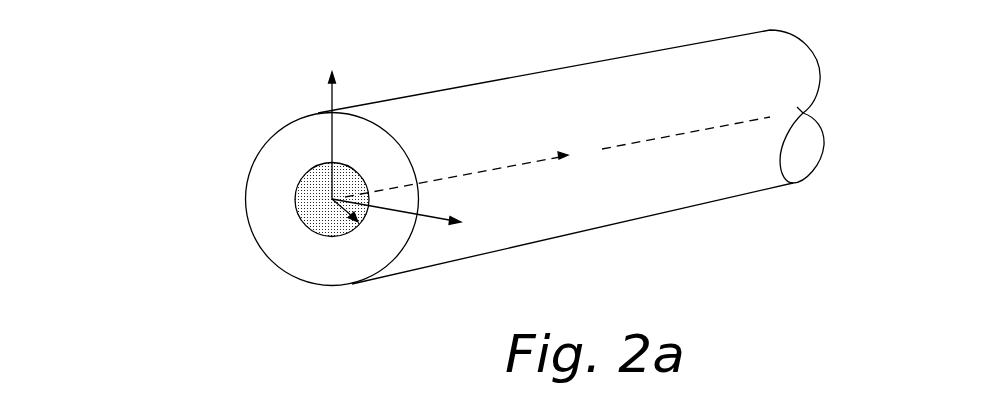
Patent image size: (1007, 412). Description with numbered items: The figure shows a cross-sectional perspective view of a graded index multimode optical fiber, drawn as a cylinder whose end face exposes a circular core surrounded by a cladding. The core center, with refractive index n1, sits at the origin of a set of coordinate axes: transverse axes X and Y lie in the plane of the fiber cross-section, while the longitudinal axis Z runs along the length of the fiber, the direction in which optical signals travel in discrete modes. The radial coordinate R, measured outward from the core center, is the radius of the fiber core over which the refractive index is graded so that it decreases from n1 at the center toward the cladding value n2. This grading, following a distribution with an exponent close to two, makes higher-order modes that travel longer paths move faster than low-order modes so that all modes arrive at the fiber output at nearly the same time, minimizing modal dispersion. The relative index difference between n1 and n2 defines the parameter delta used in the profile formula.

The core center refractive index n1 is at (332, 199).
The cladding refractive index n2 is at (323, 257).
The X axis X is at (333, 123).
The Y axis Y is at (406, 217).
The Z axis Z is at (557, 157).
The core radius R is at (353, 221).